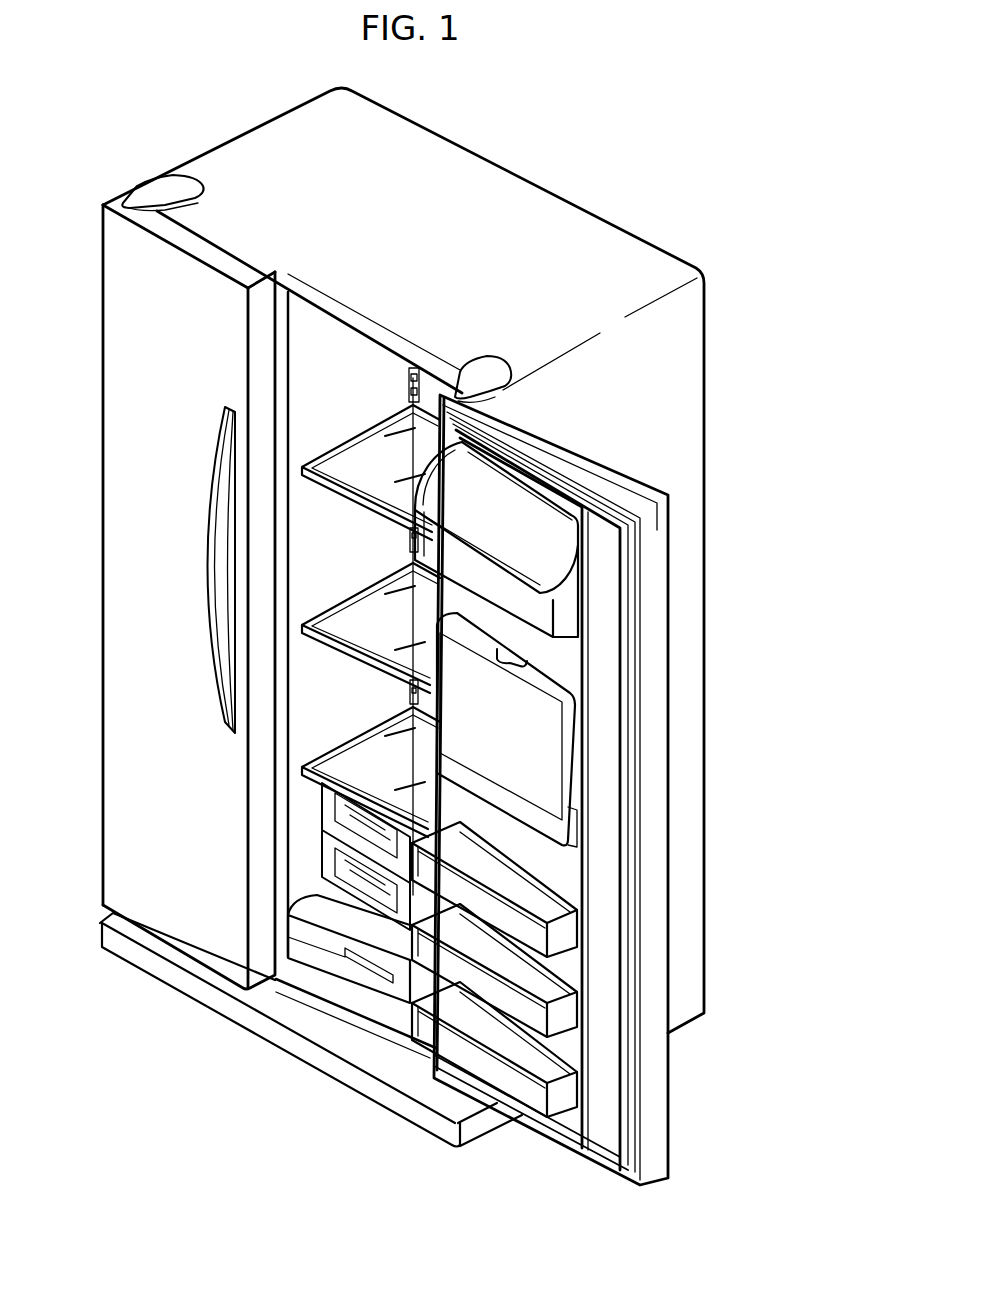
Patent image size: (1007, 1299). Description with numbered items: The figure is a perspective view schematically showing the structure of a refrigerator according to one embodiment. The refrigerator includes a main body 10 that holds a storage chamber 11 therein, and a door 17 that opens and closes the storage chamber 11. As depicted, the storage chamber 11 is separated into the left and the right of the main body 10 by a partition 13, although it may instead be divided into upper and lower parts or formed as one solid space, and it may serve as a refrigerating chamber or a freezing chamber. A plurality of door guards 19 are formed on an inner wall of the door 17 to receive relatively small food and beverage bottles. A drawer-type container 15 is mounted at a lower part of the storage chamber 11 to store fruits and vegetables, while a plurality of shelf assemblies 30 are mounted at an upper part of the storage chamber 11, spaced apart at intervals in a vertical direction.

The main body 10 is at (508, 186).
The storage chamber 11 is at (383, 388).
The partition 13 is at (280, 943).
The drawer-type container 15 is at (323, 847).
The door 17 is at (115, 463).
The door guards 19 is at (572, 1017).
The shelf assemblies 30 is at (310, 425).